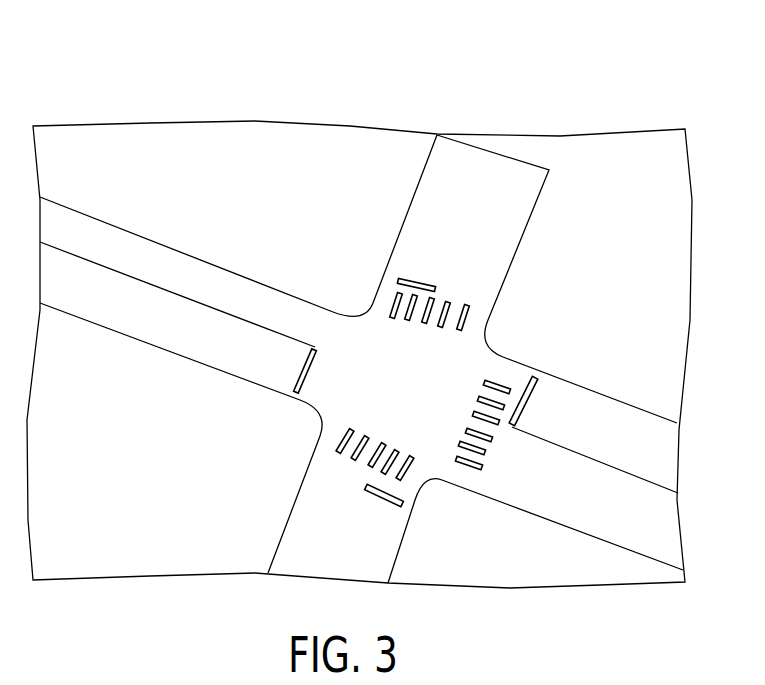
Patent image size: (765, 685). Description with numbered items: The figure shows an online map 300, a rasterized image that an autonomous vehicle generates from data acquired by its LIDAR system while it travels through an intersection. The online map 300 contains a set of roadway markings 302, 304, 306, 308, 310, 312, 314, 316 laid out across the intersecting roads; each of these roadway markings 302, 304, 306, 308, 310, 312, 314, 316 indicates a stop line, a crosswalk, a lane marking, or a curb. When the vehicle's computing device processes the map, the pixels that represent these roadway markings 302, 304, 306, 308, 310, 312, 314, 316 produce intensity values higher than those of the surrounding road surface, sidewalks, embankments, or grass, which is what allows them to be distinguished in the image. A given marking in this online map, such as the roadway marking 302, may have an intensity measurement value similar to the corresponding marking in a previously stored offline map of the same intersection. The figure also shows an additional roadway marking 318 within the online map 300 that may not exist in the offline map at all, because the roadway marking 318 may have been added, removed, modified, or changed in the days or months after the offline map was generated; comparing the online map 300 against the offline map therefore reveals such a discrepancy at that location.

The online map 300 is at (646, 104).
The roadway marking 302 is at (400, 498).
The roadway marking 304 is at (580, 456).
The roadway marking 306 is at (300, 387).
The roadway marking 308 is at (420, 283).
The roadway marking 310 is at (390, 437).
The roadway marking 312 is at (488, 467).
The roadway marking 314 is at (446, 333).
The roadway marking 316 is at (336, 312).
The roadway marking 318 is at (217, 307).